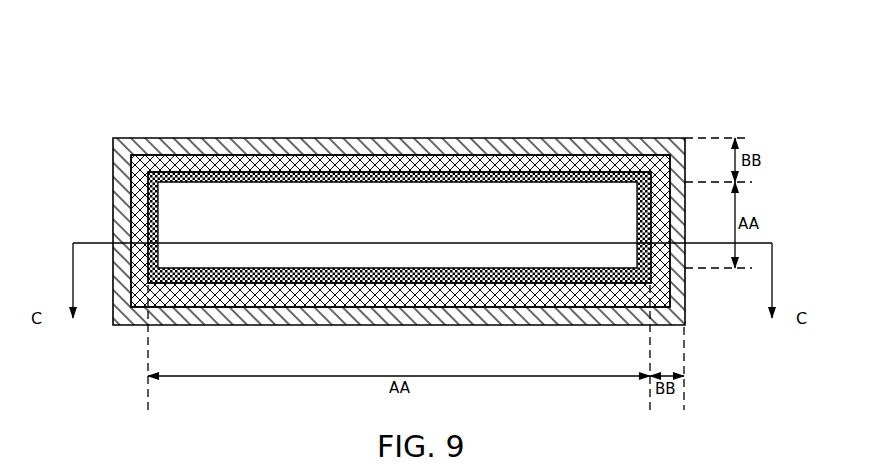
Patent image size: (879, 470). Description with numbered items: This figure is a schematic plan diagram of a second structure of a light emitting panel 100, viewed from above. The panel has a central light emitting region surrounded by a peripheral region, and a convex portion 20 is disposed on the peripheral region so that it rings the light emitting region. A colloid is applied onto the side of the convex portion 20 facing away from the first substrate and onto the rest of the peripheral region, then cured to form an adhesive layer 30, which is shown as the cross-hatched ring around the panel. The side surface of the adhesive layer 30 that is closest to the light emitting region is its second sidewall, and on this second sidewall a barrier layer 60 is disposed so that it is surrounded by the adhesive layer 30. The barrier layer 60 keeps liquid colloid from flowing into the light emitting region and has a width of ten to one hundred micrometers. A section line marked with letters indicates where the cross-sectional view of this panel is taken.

The cooking vessel / container 100 is at (436, 45).
The convex portion 20 is at (203, 145).
The adhesive layer 30 is at (448, 165).
The barrier layer 60 is at (280, 178).